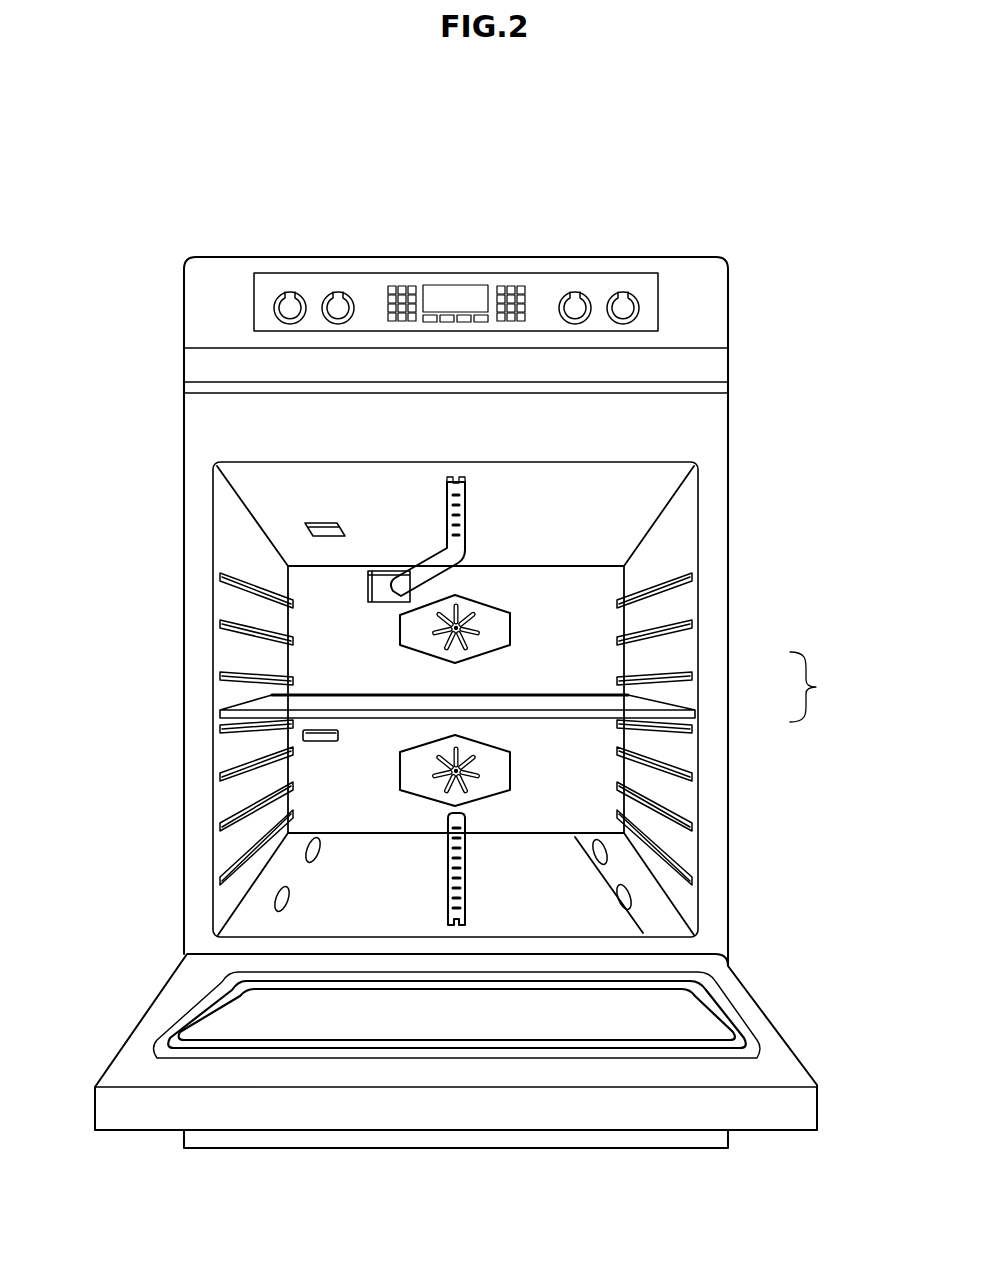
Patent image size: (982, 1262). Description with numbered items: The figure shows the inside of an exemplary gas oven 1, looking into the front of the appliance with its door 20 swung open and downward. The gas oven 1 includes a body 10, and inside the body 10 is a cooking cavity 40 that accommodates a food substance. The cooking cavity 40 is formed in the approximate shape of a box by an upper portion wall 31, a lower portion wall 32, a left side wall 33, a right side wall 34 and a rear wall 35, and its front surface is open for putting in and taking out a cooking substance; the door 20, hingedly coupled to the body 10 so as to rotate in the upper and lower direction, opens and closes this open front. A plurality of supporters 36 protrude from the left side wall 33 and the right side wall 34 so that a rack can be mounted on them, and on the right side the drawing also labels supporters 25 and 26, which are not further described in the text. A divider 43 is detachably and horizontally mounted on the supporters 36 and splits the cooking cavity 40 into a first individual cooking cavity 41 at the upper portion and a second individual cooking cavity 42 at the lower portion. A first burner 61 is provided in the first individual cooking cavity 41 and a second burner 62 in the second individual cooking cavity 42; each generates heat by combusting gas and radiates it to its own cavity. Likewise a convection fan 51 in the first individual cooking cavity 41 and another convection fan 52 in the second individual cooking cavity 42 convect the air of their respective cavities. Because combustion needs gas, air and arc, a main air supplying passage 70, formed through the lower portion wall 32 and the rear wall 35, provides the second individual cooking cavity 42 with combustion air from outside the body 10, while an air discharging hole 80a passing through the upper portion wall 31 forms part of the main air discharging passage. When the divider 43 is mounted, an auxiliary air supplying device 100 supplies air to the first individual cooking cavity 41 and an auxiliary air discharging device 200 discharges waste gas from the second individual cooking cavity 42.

The gas oven 1 is at (466, 172).
The body 10 is at (128, 400).
The door 20 is at (777, 1066).
The right rack support rails (upper) 25 is at (670, 591).
The right rack support rails (lower) 26 is at (670, 782).
The upper portion wall 31 is at (620, 485).
The lower portion wall 32 is at (345, 925).
The left side wall 33 is at (240, 558).
The right side wall 34 is at (684, 556).
The rear wall 35 is at (570, 785).
The supporters 36 is at (230, 872).
The cooking cavity 40 is at (818, 687).
The first individual cooking cavity 41 is at (561, 664).
The second individual cooking cavity 42 is at (562, 760).
The divider 43 is at (300, 708).
The convection fan 51 is at (445, 628).
The convection fan 52 is at (445, 771).
The first burner 61 is at (442, 517).
The second burner 62 is at (457, 911).
The main air supplying passage 70 is at (280, 893).
The air discharging hole 80a is at (305, 529).
The auxiliary air supplying device 100 is at (368, 590).
The auxiliary air discharging device 200 is at (318, 743).